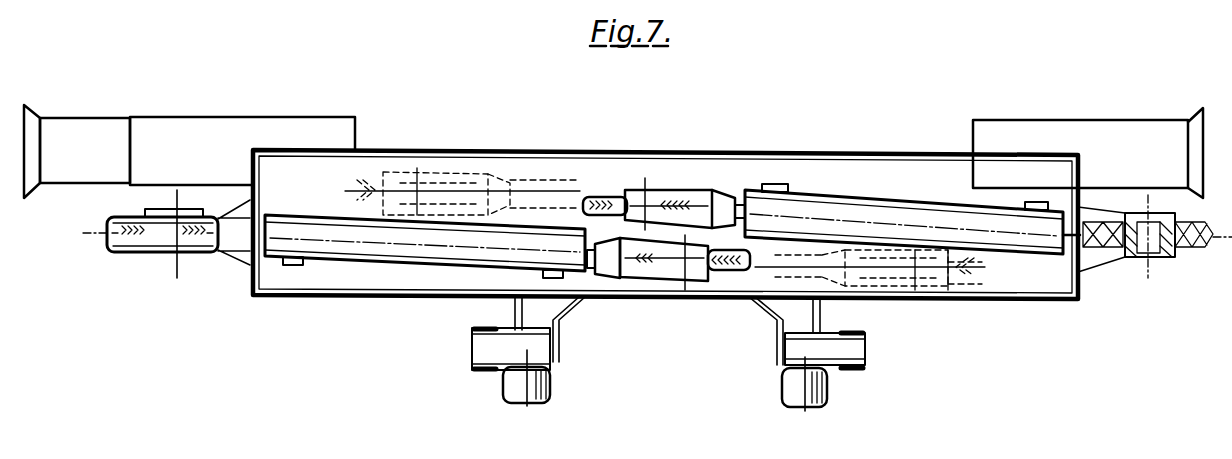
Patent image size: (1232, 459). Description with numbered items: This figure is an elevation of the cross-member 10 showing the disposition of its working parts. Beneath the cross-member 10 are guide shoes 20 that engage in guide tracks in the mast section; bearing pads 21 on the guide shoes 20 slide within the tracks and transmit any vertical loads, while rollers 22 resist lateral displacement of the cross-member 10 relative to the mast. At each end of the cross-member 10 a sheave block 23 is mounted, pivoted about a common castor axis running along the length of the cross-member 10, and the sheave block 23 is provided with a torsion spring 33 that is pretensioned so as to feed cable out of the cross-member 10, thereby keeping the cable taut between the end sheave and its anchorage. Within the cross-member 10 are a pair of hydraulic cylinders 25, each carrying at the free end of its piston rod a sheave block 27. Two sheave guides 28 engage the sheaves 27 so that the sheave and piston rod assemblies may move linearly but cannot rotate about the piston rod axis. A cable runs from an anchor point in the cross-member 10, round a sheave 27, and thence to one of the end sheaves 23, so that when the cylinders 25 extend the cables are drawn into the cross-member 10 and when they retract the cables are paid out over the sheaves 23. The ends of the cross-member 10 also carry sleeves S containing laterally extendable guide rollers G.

The cross-member 10 is at (439, 149).
The guide shoes 20 is at (553, 347).
The bearing pads 21 is at (483, 313).
The rollers 22 is at (553, 386).
The sheave block 23 is at (178, 194).
The hydraulic cylinders 25 is at (403, 261).
The sheave block 27 is at (693, 195).
The sheave guides 28 is at (374, 181).
The torsion spring 33 is at (1162, 258).
The guide rollers G is at (75, 112).
The sleeves S is at (265, 113).